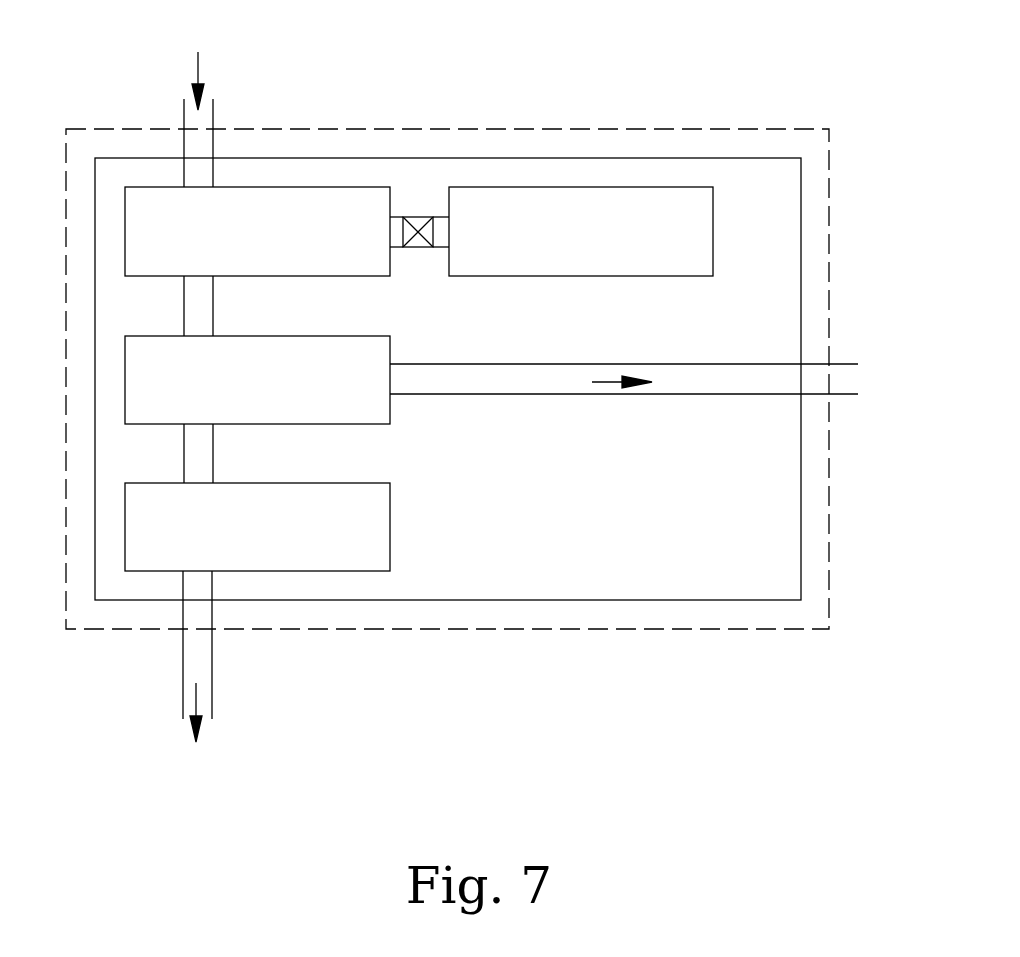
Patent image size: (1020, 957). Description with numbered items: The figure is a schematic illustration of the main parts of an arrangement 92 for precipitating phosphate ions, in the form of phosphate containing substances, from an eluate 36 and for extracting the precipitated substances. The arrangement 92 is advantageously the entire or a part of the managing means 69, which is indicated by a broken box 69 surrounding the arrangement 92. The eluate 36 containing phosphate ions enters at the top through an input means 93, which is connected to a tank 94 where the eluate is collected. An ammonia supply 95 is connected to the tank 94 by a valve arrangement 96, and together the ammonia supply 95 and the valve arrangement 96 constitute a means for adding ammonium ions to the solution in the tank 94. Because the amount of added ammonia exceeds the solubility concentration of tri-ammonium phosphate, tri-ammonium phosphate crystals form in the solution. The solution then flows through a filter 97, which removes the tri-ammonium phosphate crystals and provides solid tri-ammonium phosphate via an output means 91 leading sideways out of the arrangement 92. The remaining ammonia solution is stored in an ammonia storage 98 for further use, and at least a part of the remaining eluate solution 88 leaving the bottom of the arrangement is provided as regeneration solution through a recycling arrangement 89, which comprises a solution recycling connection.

The eluate 36 is at (191, 64).
The managing means 69 is at (829, 142).
The remaining eluate solution 88 is at (212, 654).
The recycling arrangement 89 is at (191, 730).
The output means 91 is at (632, 390).
The arrangement 92 is at (801, 255).
The input means 93 is at (184, 112).
The tank 94 is at (302, 267).
The ammonia supply 95 is at (647, 253).
The valve arrangement 96 is at (422, 253).
The filter 97 is at (337, 414).
The ammonia storage 98 is at (372, 532).